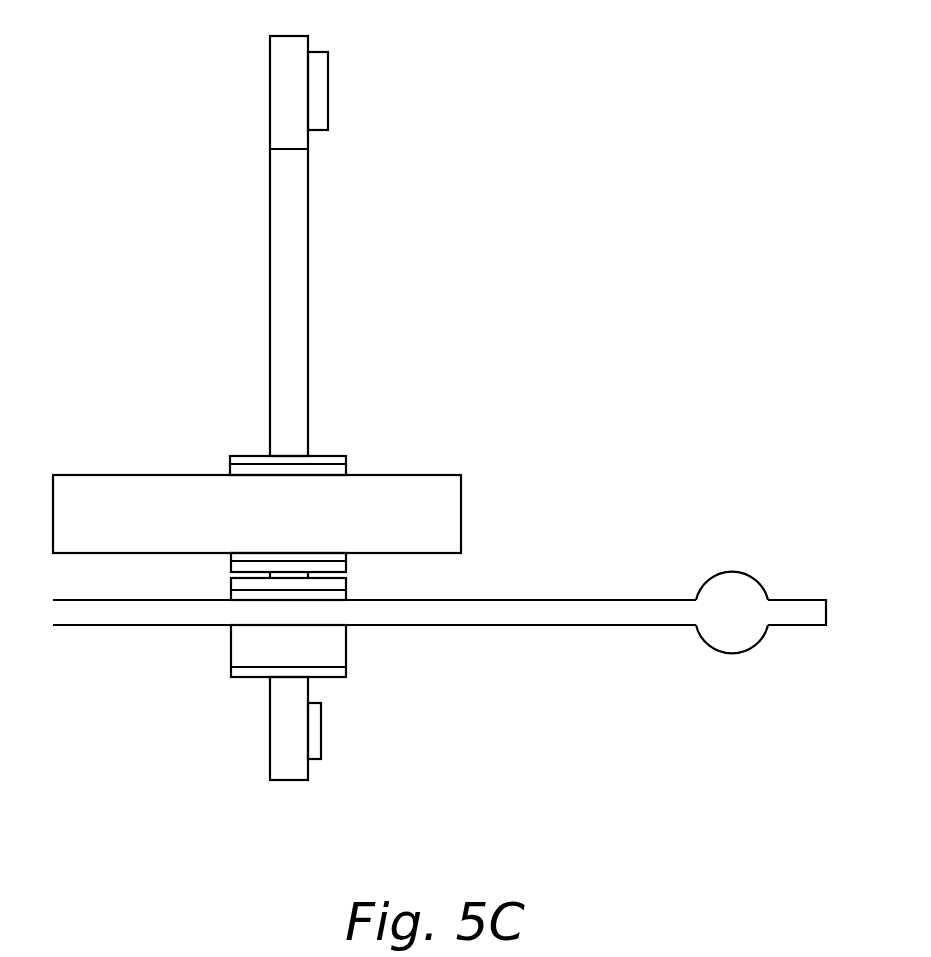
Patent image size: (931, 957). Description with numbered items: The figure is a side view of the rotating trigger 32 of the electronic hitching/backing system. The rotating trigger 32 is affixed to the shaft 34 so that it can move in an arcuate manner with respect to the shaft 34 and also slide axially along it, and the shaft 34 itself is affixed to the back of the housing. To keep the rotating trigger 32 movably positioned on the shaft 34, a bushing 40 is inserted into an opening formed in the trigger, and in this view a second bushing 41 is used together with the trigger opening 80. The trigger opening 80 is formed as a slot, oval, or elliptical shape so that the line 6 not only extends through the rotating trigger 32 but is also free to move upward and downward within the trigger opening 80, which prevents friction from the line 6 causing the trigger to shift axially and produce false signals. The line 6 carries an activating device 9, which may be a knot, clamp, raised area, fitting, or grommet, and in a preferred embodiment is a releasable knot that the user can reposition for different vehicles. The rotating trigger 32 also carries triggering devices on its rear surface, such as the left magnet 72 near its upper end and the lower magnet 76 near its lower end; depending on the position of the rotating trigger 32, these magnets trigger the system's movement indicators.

The left magnet 72 is at (332, 92).
The rotating trigger 32 is at (312, 307).
The bushing 40 is at (341, 455).
The shaft 34 is at (437, 472).
The second bushing 41 is at (355, 573).
The line 6 is at (553, 624).
The activating device 9 is at (742, 648).
The trigger opening 80 is at (230, 644).
The lower magnet 76 is at (322, 732).